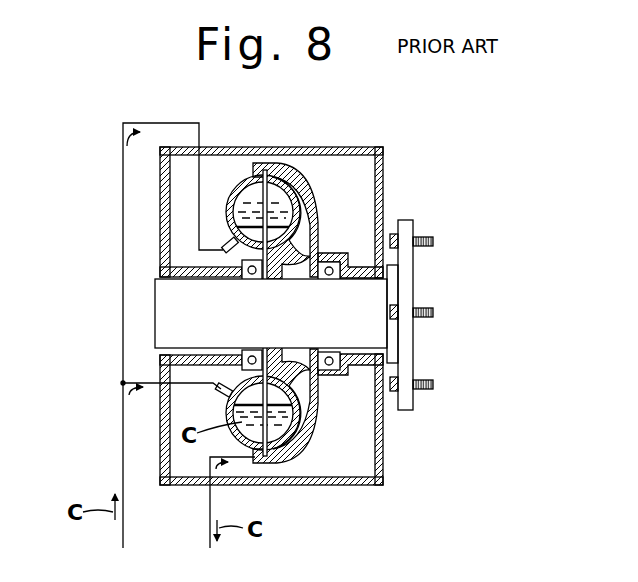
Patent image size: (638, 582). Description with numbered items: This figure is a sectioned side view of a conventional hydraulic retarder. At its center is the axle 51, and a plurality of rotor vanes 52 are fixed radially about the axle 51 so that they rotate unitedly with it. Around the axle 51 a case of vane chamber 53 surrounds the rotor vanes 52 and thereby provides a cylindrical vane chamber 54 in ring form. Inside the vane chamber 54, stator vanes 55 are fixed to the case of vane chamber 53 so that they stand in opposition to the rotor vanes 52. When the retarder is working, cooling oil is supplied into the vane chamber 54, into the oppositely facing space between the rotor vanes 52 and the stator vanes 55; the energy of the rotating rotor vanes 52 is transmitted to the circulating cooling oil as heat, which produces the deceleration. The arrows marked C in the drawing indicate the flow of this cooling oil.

The axle 51 is at (163, 319).
The rotor vanes 52 is at (282, 210).
The case of vane chamber 53 is at (304, 168).
The vane chamber 54 is at (277, 174).
The stator vanes 55 is at (240, 202).